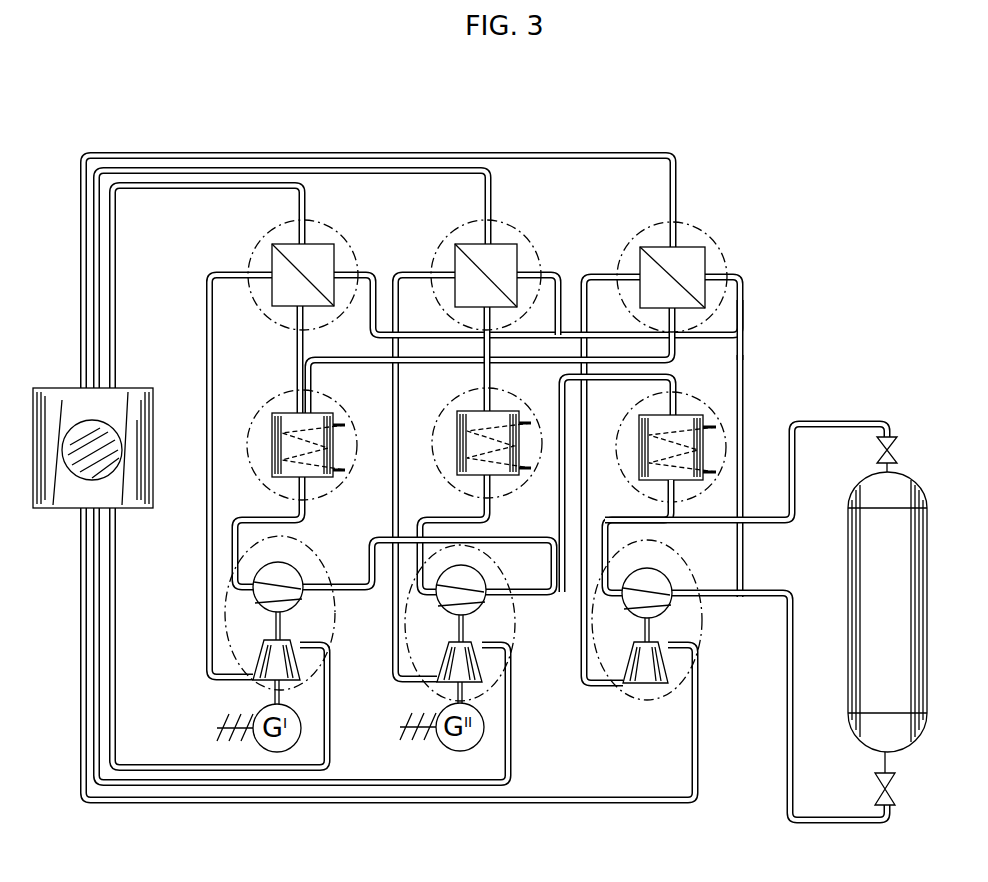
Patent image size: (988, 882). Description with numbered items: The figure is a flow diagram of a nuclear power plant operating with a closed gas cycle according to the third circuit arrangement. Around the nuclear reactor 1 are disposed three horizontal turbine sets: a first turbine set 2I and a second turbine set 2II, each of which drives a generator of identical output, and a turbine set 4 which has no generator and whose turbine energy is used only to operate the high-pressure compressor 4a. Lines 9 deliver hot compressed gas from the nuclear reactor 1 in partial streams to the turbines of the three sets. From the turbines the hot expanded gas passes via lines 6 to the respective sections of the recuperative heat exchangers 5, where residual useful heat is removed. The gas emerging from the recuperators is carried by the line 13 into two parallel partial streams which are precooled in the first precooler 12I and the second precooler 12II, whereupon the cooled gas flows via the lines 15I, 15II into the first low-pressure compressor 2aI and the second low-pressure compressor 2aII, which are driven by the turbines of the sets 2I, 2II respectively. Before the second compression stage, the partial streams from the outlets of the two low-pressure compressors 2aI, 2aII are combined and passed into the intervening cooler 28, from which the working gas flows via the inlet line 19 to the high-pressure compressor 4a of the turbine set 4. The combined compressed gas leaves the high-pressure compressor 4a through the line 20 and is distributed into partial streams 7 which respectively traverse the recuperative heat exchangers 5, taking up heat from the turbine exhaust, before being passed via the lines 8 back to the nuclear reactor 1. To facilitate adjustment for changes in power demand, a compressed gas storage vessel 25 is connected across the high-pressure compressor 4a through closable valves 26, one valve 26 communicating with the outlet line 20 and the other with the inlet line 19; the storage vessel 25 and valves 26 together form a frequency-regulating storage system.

The nuclear reactor 1 is at (52, 397).
The recuperative heat exchanger 5 is at (323, 255).
The line from turbine to recuperator 6 is at (210, 308).
The partial stream line 7 is at (370, 298).
The line to nuclear reactor 8 is at (263, 185).
The line from reactor to turbine 9 is at (222, 769).
The line carrying the entire gas flow 13 is at (297, 372).
The first precooler 12I is at (319, 421).
The second precooler 12II is at (503, 420).
The intervening cooler 28 is at (689, 423).
The line from high-pressure compressor 20 is at (746, 430).
The line to first low-pressure compressor 15I is at (265, 517).
The line to second low-pressure compressor 15II is at (447, 519).
The inlet line of high-pressure compressor 19 is at (628, 519).
The first low-pressure compressor 2aI is at (290, 582).
The second low-pressure compressor 2aII is at (448, 596).
The high-pressure compressor 4a is at (662, 588).
The first turbine set 2I is at (273, 622).
The second turbine set 2II is at (500, 612).
The turbine set with high-pressure compressor 4 is at (643, 623).
The compressed gas storage vessel 25 is at (862, 538).
The valve 26 is at (880, 445).